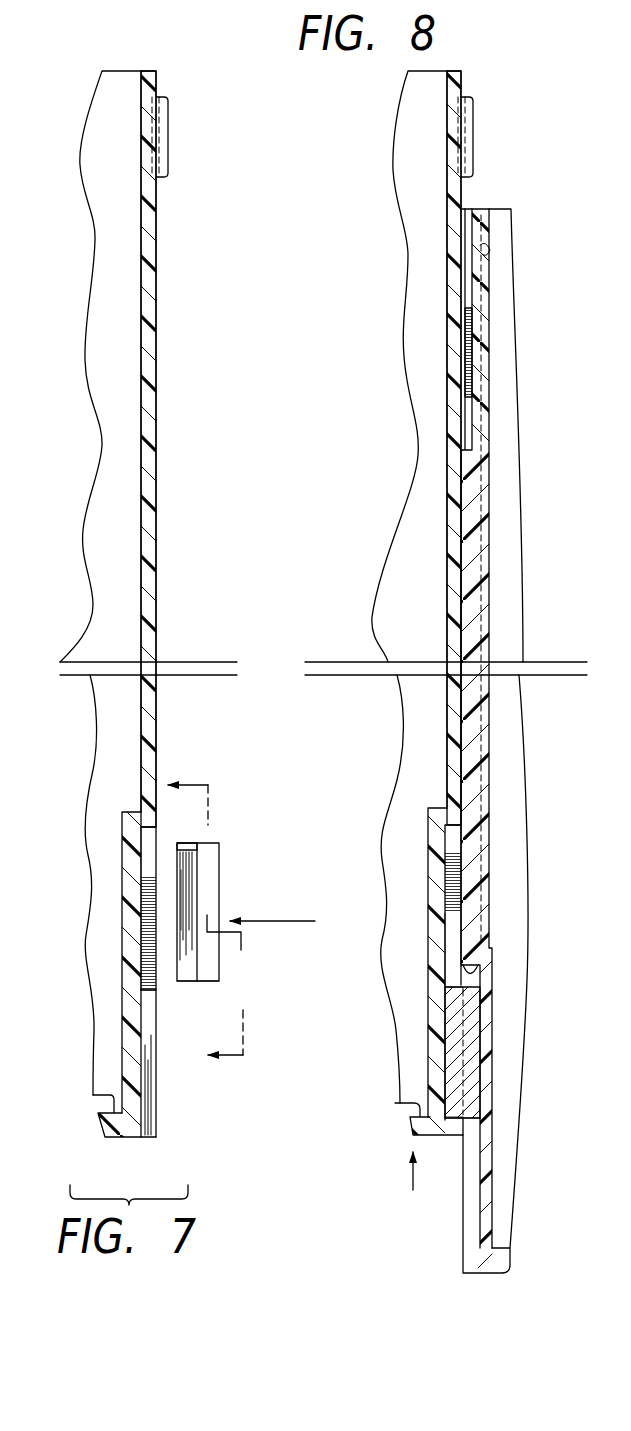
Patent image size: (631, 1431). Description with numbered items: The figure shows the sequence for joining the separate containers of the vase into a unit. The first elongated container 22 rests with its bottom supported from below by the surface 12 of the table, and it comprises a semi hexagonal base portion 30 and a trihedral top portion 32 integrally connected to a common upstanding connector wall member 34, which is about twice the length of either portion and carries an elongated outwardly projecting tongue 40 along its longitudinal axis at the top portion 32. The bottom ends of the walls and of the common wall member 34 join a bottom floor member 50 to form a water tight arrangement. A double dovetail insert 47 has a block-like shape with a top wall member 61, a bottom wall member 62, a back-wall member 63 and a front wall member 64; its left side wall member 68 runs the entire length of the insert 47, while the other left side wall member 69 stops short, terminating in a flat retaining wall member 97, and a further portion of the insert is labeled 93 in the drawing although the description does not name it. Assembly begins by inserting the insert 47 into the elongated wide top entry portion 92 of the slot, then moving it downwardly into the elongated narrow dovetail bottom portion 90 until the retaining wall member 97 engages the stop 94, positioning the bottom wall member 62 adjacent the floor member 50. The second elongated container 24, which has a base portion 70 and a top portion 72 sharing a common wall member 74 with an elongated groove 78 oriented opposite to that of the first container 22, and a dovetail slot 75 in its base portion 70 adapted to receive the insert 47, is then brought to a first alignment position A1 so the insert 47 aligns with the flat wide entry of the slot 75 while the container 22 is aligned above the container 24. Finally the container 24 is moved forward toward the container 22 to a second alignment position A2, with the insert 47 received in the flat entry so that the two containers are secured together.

In FIG. 7, the surface 12 is at (208, 924).
In FIG. 7, the first elongated container 22 is at (92, 583).
In FIG. 8, the first elongated container 22 is at (399, 587).
In FIG. 7, the second elongated container 24 is at (134, 610).
In FIG. 8, the second elongated container 24 is at (474, 612).
In FIG. 7, the semi hexagonal base portion 30 is at (76, 762).
In FIG. 8, the semi hexagonal base portion 30 is at (384, 762).
In FIG. 7, the trihedral top portion 32 is at (74, 197).
In FIG. 8, the trihedral top portion 32 is at (382, 197).
In FIG. 7, the common upstanding connector wall member 34 is at (156, 312).
In FIG. 8, the common upstanding connector wall member 34 is at (447, 585).
In FIG. 7, the elongated outwardly projecting tongue 40 is at (168, 135).
In FIG. 8, the elongated outwardly projecting tongue 40 is at (473, 133).
In FIG. 7, the double dovetail insert 47 is at (180, 921).
In FIG. 8, the double dovetail insert 47 is at (497, 1099).
In FIG. 7, the bottom floor member 50 is at (93, 1095).
In FIG. 8, the bottom floor member 50 is at (392, 1106).
In FIG. 7, the top wall member 61 is at (208, 843).
In FIG. 8, the top wall member 61 is at (463, 987).
In FIG. 7, the bottom wall member 62 is at (185, 985).
In FIG. 8, the bottom wall member 62 is at (455, 1136).
In FIG. 7, the back-wall member 63 is at (150, 905).
In FIG. 7, the front wall member 64 is at (219, 950).
In FIG. 7, the left side wall member 68 is at (210, 975).
In FIG. 7, the left side wall member 69 is at (185, 935).
In FIG. 8, the base portion 70 is at (533, 702).
In FIG. 8, the top portion 72 is at (534, 492).
In FIG. 8, the common wall member 74 is at (478, 621).
In FIG. 8, the dovetail slot 75 is at (470, 973).
In FIG. 8, the elongated groove 78 is at (466, 410).
In FIG. 7, the elongated narrow dovetail bottom portion 90 is at (157, 1110).
In FIG. 7, the elongated wide top entry portion 92 is at (150, 838).
In FIG. 8, the elongated wide top entry portion 92 is at (456, 830).
In FIG. 7, the inner fibers 93 is at (197, 890).
In FIG. 7, the stop 94 is at (150, 978).
In FIG. 8, the stop 94 is at (452, 975).
In FIG. 7, the flat retaining wall member 97 is at (178, 870).
In FIG. 8, the flat retaining wall member 97 is at (452, 1012).
In FIG. 8, the first alignment position A1 is at (490, 250).
In FIG. 8, the second alignment position A2 is at (492, 198).